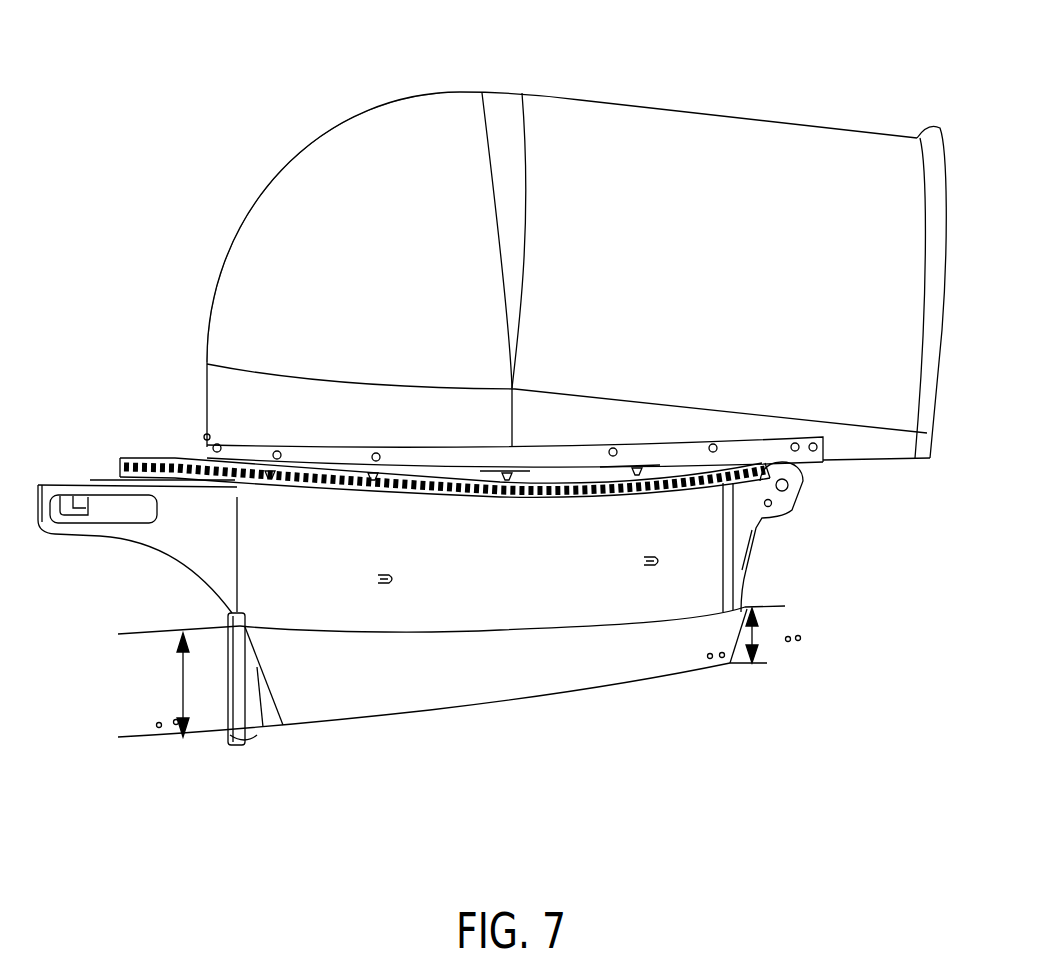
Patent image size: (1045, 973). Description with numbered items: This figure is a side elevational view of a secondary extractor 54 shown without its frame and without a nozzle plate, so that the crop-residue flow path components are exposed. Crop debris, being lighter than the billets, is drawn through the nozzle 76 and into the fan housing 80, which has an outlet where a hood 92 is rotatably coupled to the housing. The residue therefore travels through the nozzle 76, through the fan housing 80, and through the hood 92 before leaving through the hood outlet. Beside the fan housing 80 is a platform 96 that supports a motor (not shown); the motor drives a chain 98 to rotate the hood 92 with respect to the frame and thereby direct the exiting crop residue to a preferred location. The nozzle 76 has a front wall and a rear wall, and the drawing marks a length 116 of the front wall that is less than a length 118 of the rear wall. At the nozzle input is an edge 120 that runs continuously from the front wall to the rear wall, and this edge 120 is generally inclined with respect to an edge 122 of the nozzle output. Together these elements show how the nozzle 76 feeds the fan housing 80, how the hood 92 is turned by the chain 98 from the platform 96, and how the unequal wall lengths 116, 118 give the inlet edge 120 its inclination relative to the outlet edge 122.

The hood assembly 54 is at (588, 78).
The hood 92 is at (316, 176).
The platform 96 is at (68, 485).
The chain 98 is at (147, 462).
The edge of the nozzle output 122 is at (482, 632).
The fan housing 80 is at (715, 555).
The length of the front wall 116 is at (757, 637).
The length of the rear wall 118 is at (180, 678).
The edge at the nozzle input 120 is at (407, 716).
The nozzle 76 is at (285, 765).